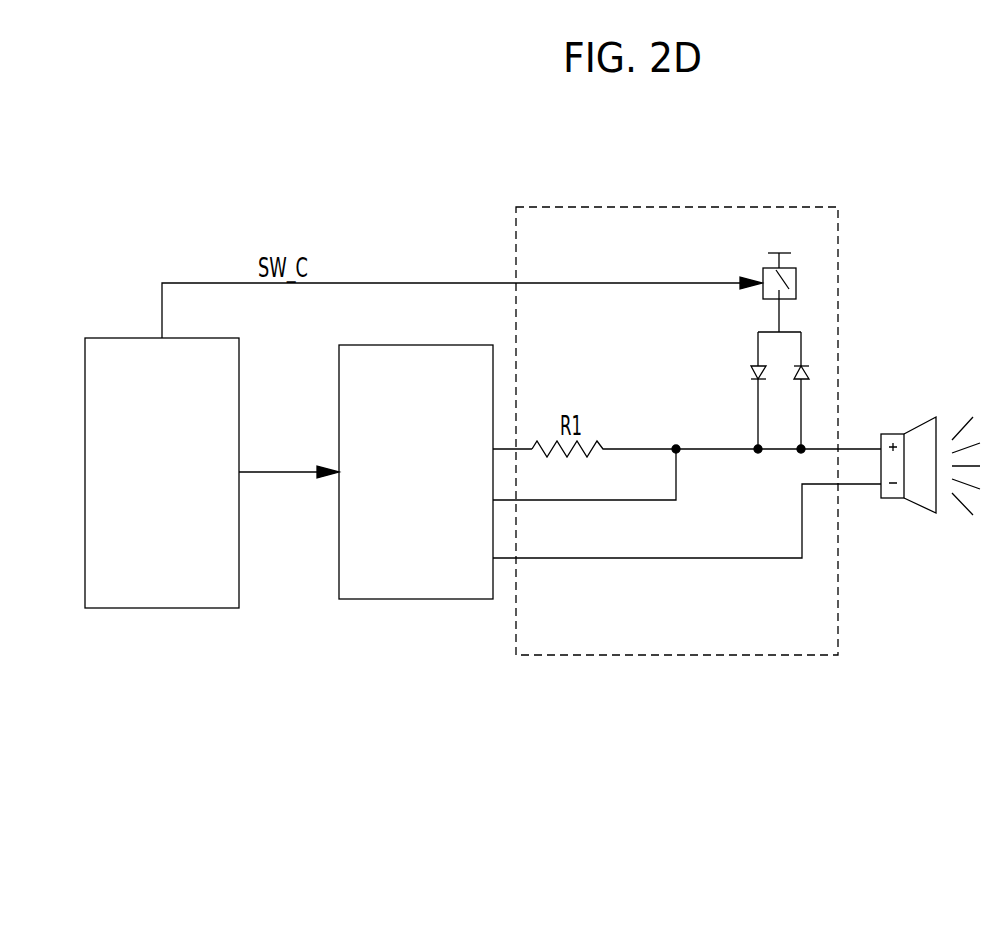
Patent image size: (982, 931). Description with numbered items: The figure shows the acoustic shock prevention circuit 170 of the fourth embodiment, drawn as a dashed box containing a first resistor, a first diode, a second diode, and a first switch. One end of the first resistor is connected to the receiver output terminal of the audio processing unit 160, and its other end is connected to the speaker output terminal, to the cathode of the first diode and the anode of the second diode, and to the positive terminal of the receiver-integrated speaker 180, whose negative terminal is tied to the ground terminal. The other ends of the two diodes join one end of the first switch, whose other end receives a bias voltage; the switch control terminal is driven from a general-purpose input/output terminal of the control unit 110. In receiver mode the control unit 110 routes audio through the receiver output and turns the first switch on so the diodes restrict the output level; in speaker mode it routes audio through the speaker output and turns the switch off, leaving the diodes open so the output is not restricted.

The control unit 110 is at (133, 609).
The audio processing unit 160 is at (390, 600).
The acoustic shock prevention circuit 170 is at (731, 207).
The receiver-integrated speaker 180 is at (937, 417).